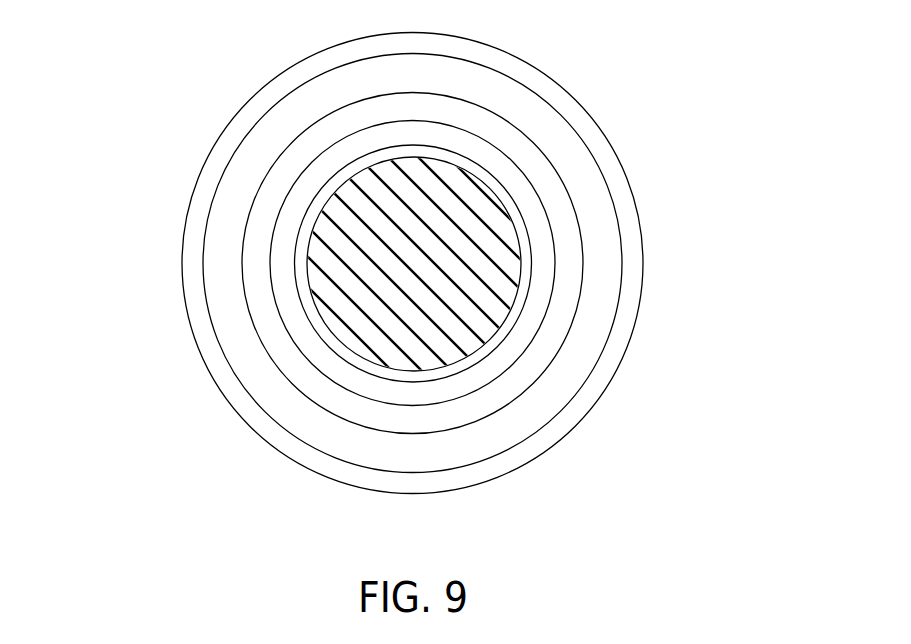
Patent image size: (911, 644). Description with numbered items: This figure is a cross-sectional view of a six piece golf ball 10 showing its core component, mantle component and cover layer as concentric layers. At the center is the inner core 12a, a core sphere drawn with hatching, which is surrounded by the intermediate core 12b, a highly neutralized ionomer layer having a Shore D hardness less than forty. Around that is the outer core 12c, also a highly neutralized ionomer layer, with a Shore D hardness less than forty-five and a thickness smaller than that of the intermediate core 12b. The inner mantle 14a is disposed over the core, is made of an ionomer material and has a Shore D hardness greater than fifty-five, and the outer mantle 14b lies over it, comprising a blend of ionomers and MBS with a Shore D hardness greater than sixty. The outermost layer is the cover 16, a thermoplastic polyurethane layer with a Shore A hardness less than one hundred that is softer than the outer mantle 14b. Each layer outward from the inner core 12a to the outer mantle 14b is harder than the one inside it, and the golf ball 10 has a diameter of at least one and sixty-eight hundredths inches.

The golf ball 10 is at (454, 254).
The inner core 12a is at (493, 311).
The intermediate core 12b is at (282, 290).
The outer core 12c is at (360, 365).
The inner mantle 14a is at (305, 148).
The outer mantle 14b is at (545, 122).
The cover 16 is at (638, 203).